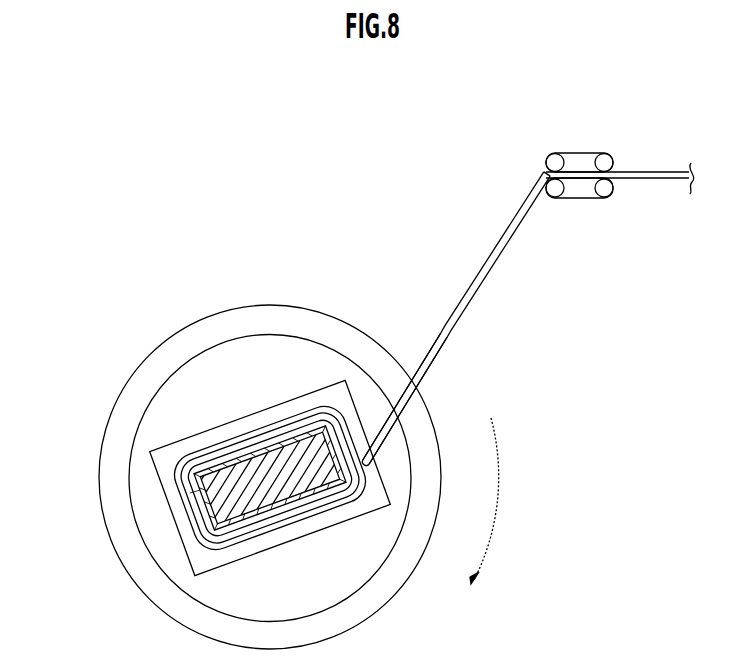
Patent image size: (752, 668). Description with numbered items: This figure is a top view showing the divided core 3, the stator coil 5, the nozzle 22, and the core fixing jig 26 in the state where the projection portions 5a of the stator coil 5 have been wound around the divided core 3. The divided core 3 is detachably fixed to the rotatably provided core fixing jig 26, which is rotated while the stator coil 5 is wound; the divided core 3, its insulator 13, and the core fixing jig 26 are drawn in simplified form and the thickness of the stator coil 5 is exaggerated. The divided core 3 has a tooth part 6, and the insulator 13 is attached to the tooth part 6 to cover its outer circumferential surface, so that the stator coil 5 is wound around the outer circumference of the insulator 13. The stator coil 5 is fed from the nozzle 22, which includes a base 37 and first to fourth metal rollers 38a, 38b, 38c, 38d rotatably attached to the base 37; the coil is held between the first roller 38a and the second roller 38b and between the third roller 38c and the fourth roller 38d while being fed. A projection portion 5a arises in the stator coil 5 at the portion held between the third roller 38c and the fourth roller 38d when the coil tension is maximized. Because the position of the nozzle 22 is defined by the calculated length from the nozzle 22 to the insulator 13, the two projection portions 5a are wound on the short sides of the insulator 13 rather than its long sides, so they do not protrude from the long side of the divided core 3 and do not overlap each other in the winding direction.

The divided core 3 is at (296, 389).
The stator coil 5 is at (485, 268).
The projection portion 5a is at (188, 493).
The tooth part 6 is at (243, 447).
The insulator 13 is at (275, 452).
The nozzle 22 is at (583, 140).
The core fixing jig 26 is at (133, 397).
The base 37 is at (576, 202).
The first roller 38a is at (612, 157).
The second roller 38b is at (612, 198).
The third roller 38c is at (547, 157).
The fourth roller 38d is at (557, 200).